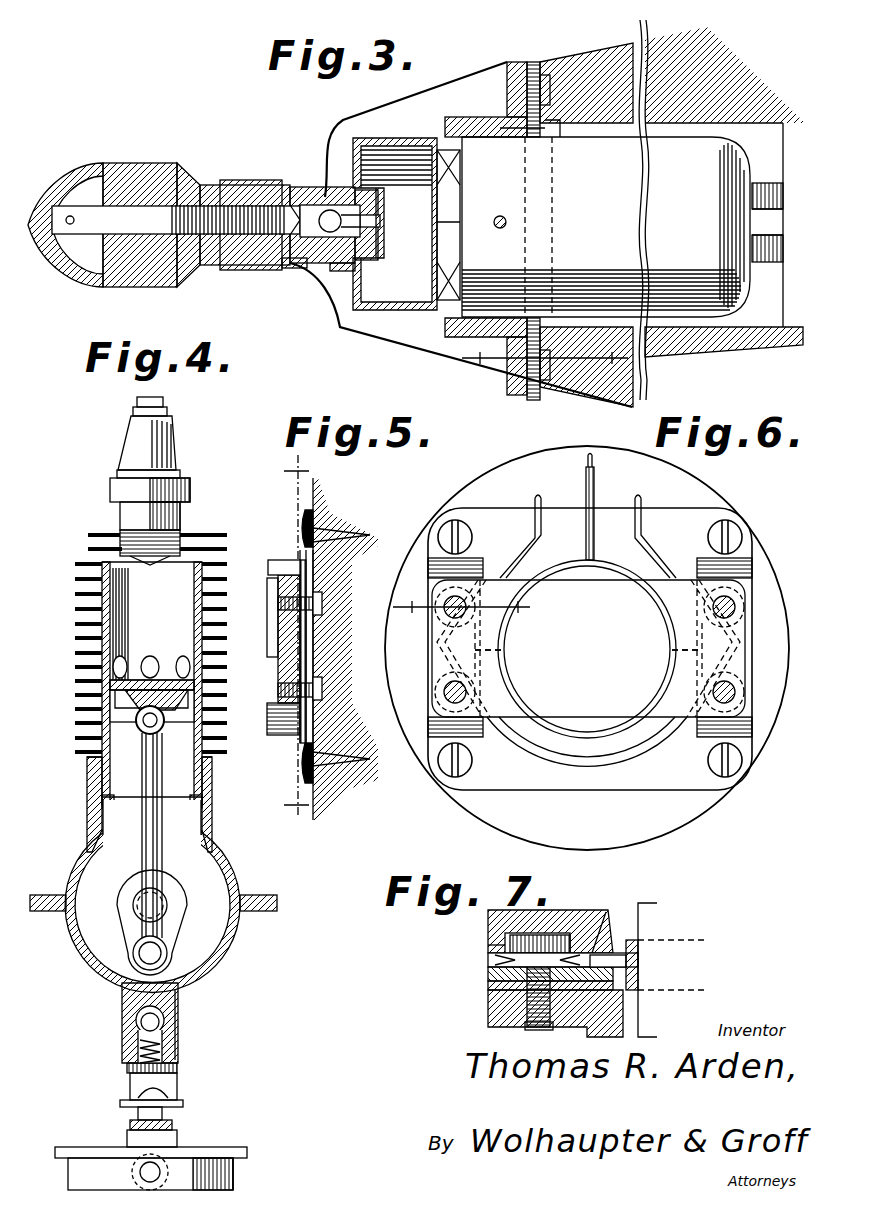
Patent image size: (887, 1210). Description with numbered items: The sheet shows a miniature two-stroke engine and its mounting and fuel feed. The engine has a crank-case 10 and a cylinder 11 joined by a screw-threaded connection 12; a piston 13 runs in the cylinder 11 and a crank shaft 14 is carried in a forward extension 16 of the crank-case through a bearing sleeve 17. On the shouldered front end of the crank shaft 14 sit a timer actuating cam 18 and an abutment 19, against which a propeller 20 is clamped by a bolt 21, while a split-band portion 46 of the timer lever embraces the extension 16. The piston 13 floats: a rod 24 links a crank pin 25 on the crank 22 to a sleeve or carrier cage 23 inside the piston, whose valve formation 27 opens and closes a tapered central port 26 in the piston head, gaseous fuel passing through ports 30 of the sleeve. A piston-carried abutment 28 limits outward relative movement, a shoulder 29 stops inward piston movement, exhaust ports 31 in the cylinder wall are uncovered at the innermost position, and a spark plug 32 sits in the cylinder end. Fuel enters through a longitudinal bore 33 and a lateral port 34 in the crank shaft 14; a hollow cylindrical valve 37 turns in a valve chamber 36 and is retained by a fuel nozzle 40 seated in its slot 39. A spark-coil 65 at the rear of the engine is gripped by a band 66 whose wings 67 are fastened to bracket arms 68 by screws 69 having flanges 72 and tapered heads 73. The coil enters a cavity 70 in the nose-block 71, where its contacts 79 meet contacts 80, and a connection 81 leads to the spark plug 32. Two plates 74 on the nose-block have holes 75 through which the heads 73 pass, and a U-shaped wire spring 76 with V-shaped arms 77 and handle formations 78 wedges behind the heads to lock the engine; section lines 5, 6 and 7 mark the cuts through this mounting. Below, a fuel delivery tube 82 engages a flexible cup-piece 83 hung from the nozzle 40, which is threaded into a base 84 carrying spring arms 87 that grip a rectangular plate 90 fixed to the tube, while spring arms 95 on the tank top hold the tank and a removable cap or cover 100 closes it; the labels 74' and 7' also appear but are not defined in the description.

In FIG. 3, the section line 5— 5 is at (538, 360).
In FIG. 5, the section line 6— 6 is at (296, 644).
In FIG. 6, the section line 7— 7 is at (461, 607).
In FIG. 4, the base member 7' is at (258, 1174).
In FIG. 3, the crank-case 10 is at (400, 140).
In FIG. 4, the crank-case 10 is at (243, 903).
In FIG. 4, the cylinder 11 is at (151, 671).
In FIG. 4, the screw-threaded connection 12 is at (87, 800).
In FIG. 4, the piston 13 is at (205, 760).
In FIG. 3, the crank shaft 14 is at (306, 187).
In FIG. 3, the forward extension 16 is at (287, 268).
In FIG. 3, the bearing sleeve 17 is at (338, 263).
In FIG. 3, the timer actuating cam 18 is at (207, 185).
In FIG. 3, the abutment 19 is at (195, 268).
In FIG. 3, the propeller 20 is at (137, 165).
In FIG. 3, the bolt 21 is at (148, 218).
In FIG. 4, the crank 22 is at (178, 941).
In FIG. 4, the sleeve or carrier cage 23 is at (188, 797).
In FIG. 4, the rod 24 is at (162, 862).
In FIG. 4, the crank pin 25 is at (133, 953).
In FIG. 4, the central port 26 is at (145, 700).
In FIG. 4, the central valve formation 27 is at (158, 700).
In FIG. 4, the piston-carried abutment 28 is at (90, 825).
In FIG. 4, the shoulder 29 is at (212, 812).
In FIG. 4, the ports 30 is at (190, 693).
In FIG. 4, the exhaust ports 31 is at (110, 667).
In FIG. 4, the spark plug 32 is at (125, 512).
In FIG. 3, the longitudinal bore 33 is at (378, 214).
In FIG. 3, the lateral port 34 is at (342, 225).
In FIG. 4, the valve chamber 36 is at (128, 1003).
In FIG. 4, the hollow cylindrical valve 37 is at (178, 1003).
In FIG. 4, the circumferentially extending slot 39 is at (139, 1020).
In FIG. 4, the fuel nozzle 40 is at (138, 1050).
In FIG. 3, the split-band portion 46 is at (255, 180).
In FIG. 3, the spark-coil 65 is at (606, 227).
In FIG. 6, the spark-coil 65 is at (587, 649).
In FIG. 7, the spark-coil 65 is at (671, 970).
In FIG. 3, the band 66 is at (540, 137).
In FIG. 6, the band 66 is at (570, 742).
In FIG. 7, the band 66 is at (640, 940).
In FIG. 3, the wings 67 is at (533, 62).
In FIG. 5, the wings 67 is at (282, 640).
In FIG. 6, the wings 67 is at (436, 667).
In FIG. 7, the wings 67 is at (488, 978).
In FIG. 3, the engine mounting bracket arms 68 is at (507, 62).
In FIG. 5, the engine mounting bracket arms 68 is at (290, 560).
In FIG. 7, the engine mounting bracket arms 68 is at (490, 1010).
In FIG. 5, the screws 69 is at (282, 598).
In FIG. 6, the screws 69 is at (737, 606).
In FIG. 7, the screws 69 is at (552, 1028).
In FIG. 3, the cavity 70 is at (665, 330).
In FIG. 3, the nose-block 71 is at (650, 50).
In FIG. 6, the nose-block 71 is at (708, 500).
In FIG. 7, the nose-block 71 is at (512, 922).
In FIG. 5, the flanges 72 is at (322, 600).
In FIG. 7, the flanges 72 is at (520, 1027).
In FIG. 5, the heads 73 is at (322, 604).
In FIG. 7, the heads 73 is at (545, 937).
In FIG. 3, the plates 74 is at (500, 230).
In FIG. 5, the plates 74 is at (339, 649).
In FIG. 6, the plates 74 is at (612, 649).
In FIG. 7, the plates 74 is at (544, 956).
In FIG. 6, the plate portion 74' is at (588, 654).
In FIG. 5, the holes 75 is at (330, 547).
In FIG. 3, the U-shaped wire spring 76 is at (560, 128).
In FIG. 6, the U-shaped wire spring 76 is at (580, 770).
In FIG. 7, the U-shaped wire spring 76 is at (637, 962).
In FIG. 3, the side portions or arms 77 is at (515, 137).
In FIG. 5, the side portions or arms 77 is at (313, 660).
In FIG. 6, the side portions or arms 77 is at (436, 642).
In FIG. 7, the side portions or arms 77 is at (492, 942).
In FIG. 6, the handle formations 78 is at (534, 524).
In FIG. 7, the handle formations 78 is at (607, 912).
In FIG. 3, the contacts 79 is at (745, 240).
In FIG. 3, the contacts 80 is at (777, 246).
In FIG. 3, the connection 81 is at (501, 229).
In FIG. 6, the connection 81 is at (596, 472).
In FIG. 4, the fuel delivery tube 82 is at (172, 1126).
In FIG. 4, the flexible cup-piece 83 is at (170, 1090).
In FIG. 4, the base 84 is at (177, 1041).
In FIG. 4, the spring arms 87 is at (130, 1088).
In FIG. 4, the rectangular plate 90 is at (183, 1104).
In FIG. 4, the spring arms 95 is at (127, 1139).
In FIG. 4, the cap or cover 100 is at (235, 1155).